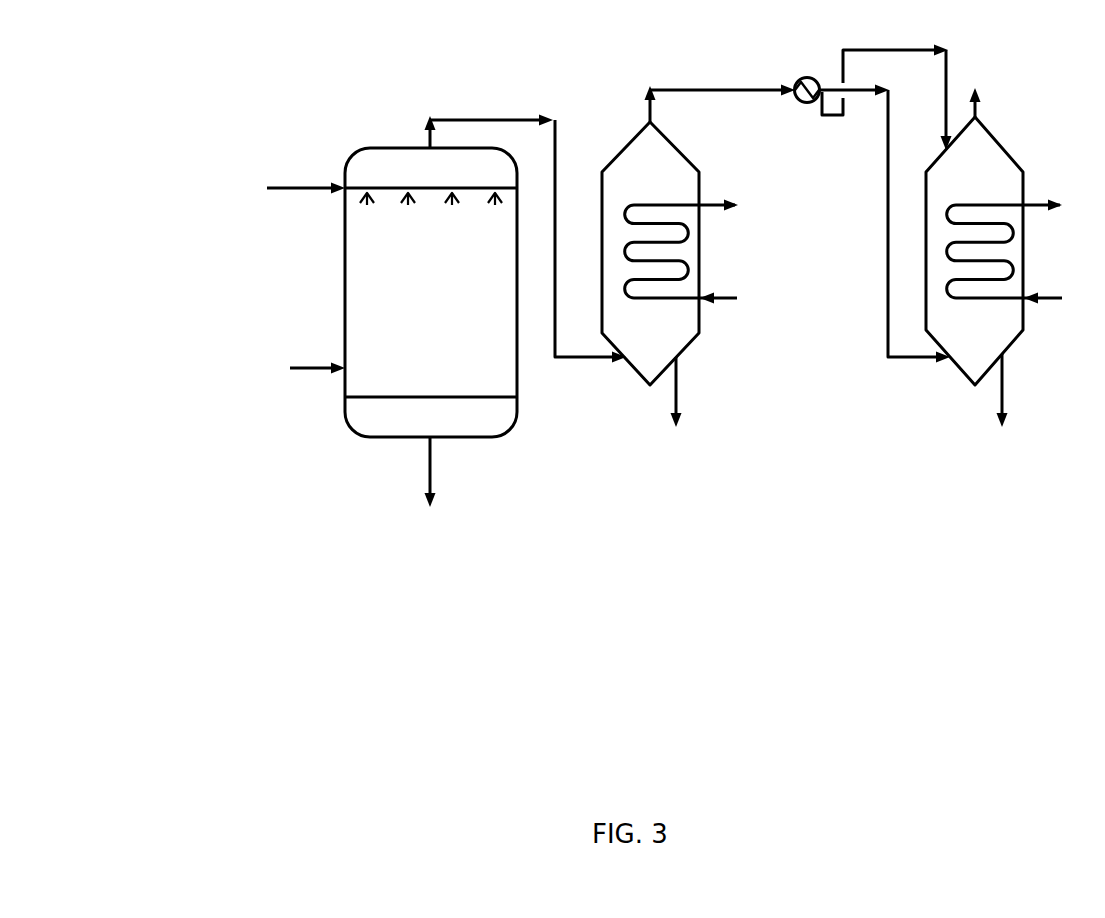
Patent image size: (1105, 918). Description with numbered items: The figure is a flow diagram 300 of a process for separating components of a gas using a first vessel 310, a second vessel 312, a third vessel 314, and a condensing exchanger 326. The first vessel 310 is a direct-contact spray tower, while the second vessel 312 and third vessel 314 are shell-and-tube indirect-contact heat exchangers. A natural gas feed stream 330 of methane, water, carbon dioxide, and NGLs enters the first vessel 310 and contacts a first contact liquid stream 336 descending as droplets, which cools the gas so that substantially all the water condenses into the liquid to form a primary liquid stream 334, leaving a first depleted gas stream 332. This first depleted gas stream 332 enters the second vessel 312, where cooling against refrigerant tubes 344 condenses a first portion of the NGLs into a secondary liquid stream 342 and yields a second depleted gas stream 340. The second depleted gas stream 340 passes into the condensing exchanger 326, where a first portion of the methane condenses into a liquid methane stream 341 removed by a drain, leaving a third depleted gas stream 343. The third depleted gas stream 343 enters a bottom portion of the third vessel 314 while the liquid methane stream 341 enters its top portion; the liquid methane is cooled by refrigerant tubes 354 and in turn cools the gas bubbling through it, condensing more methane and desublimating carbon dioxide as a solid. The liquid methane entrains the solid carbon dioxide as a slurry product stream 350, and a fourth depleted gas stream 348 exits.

The flow diagram 300 is at (150, 82).
The first vessel 310 is at (345, 292).
The second vessel 312 is at (687, 157).
The third vessel 314 is at (1012, 157).
The condensing exchanger 326 is at (799, 78).
The natural gas feed stream 330 is at (291, 368).
The first depleted gas stream 332 is at (526, 225).
The primary liquid stream 334 is at (428, 489).
The first contact liquid stream 336 is at (279, 188).
The second depleted gas stream 340 is at (720, 90).
The liquid methane stream 341 is at (887, 86).
The secondary liquid stream 342 is at (677, 409).
The third depleted gas stream 343 is at (885, 238).
The refrigerant tubes 344 is at (690, 233).
The fourth depleted gas stream 348 is at (983, 87).
The slurry product stream 350 is at (1003, 406).
The refrigerant tubes 354 is at (1013, 233).